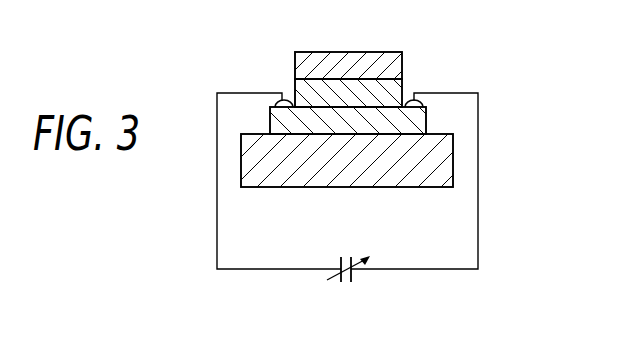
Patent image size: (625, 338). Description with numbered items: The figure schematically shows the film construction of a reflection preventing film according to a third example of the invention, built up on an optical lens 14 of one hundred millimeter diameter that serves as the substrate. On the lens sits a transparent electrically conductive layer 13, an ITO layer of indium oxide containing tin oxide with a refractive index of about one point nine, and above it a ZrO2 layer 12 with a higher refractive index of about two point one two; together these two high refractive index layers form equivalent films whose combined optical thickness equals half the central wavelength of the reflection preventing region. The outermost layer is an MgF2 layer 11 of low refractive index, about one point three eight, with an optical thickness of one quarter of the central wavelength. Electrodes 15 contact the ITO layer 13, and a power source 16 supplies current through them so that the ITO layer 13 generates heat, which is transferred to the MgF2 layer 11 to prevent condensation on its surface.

The MgF2 layer 11 is at (402, 61).
The ZrO2 layer 12 is at (402, 84).
The transparent electrically conductive layer 13 is at (427, 117).
The optical lens 14 is at (438, 189).
The electrodes 15 is at (280, 100).
The power source 16 is at (340, 266).